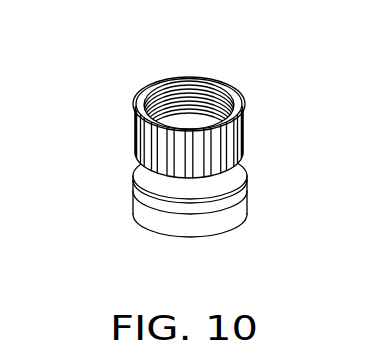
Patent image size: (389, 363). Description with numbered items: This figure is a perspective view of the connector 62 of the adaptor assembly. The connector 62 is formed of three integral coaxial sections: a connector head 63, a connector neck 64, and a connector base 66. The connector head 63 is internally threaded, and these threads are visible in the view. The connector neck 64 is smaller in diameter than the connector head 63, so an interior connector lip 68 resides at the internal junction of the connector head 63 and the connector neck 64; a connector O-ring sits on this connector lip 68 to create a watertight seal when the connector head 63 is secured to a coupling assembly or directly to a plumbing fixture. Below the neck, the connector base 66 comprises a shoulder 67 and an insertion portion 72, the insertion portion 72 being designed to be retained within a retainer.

The connector 62 is at (170, 143).
The connector head 63 is at (233, 105).
The connector lip 68 is at (172, 122).
The shoulder 67 is at (142, 169).
The insertion portion 72 is at (130, 188).
The connector base 66 is at (188, 194).
The connector neck 64 is at (255, 163).